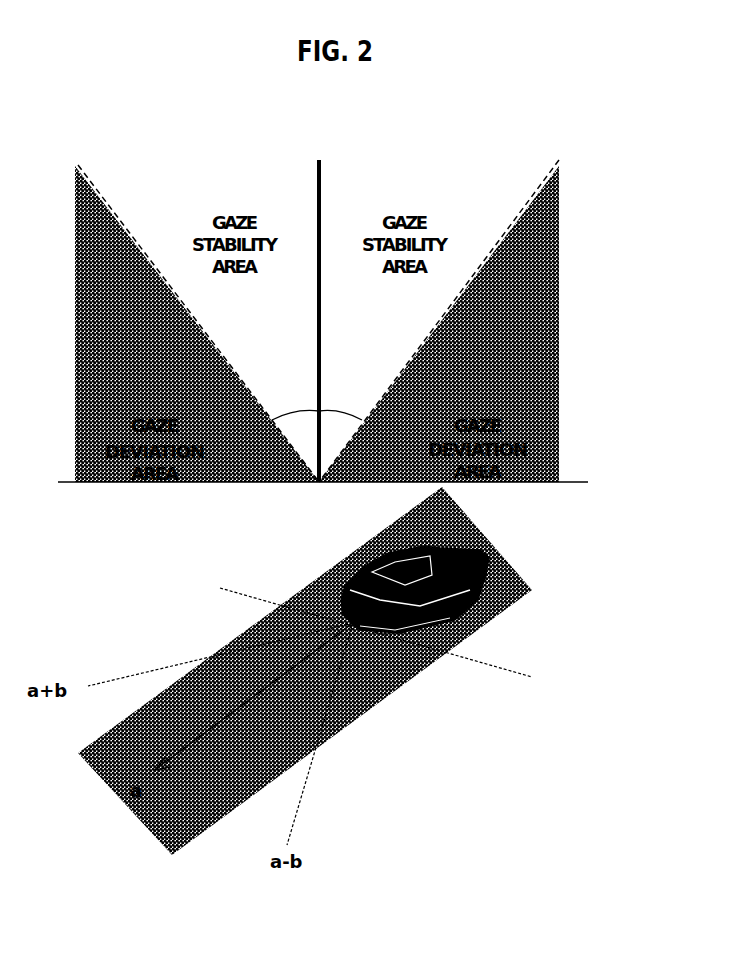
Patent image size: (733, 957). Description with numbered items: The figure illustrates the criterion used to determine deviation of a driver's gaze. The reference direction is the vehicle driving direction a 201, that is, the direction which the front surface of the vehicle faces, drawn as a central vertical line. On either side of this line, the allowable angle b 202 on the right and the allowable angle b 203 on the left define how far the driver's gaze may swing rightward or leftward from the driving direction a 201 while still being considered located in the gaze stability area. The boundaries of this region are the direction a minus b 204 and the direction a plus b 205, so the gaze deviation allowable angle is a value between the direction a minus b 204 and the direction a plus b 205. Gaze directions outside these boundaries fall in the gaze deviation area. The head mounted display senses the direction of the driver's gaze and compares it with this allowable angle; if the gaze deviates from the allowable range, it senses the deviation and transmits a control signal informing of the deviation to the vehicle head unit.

The vehicle driving direction a 201 is at (333, 150).
The allowable angle b 202 is at (362, 420).
The allowable angle b 203 is at (272, 420).
The a−b 204 is at (98, 152).
The a+b 205 is at (572, 152).